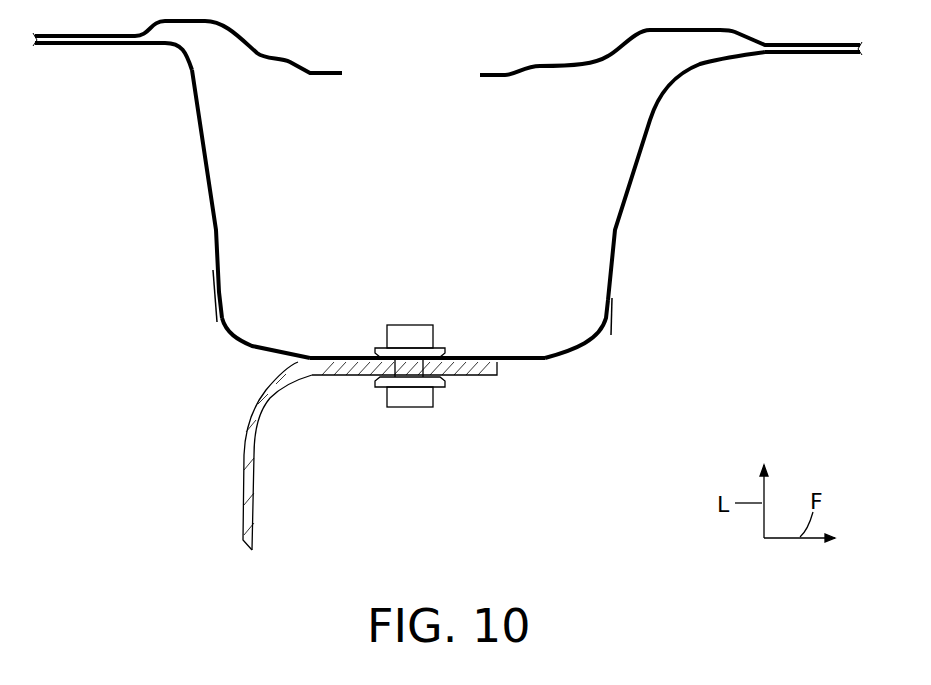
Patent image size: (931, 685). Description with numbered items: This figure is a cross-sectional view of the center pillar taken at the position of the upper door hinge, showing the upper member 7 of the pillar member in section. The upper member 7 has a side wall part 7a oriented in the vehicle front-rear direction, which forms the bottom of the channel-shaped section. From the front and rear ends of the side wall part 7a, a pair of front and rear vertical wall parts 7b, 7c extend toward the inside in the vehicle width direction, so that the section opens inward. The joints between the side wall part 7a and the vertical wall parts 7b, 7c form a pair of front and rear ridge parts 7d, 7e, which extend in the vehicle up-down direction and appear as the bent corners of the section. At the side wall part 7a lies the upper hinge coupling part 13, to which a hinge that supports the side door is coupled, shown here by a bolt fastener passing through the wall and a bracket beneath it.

The upper member 7 is at (447, 285).
The side wall part 7a is at (467, 356).
The front vertical wall part 7b is at (630, 192).
The rear vertical wall part 7c is at (213, 181).
The front ridge part 7d is at (603, 337).
The rear ridge part 7e is at (225, 332).
The upper hinge coupling part 13 is at (422, 423).